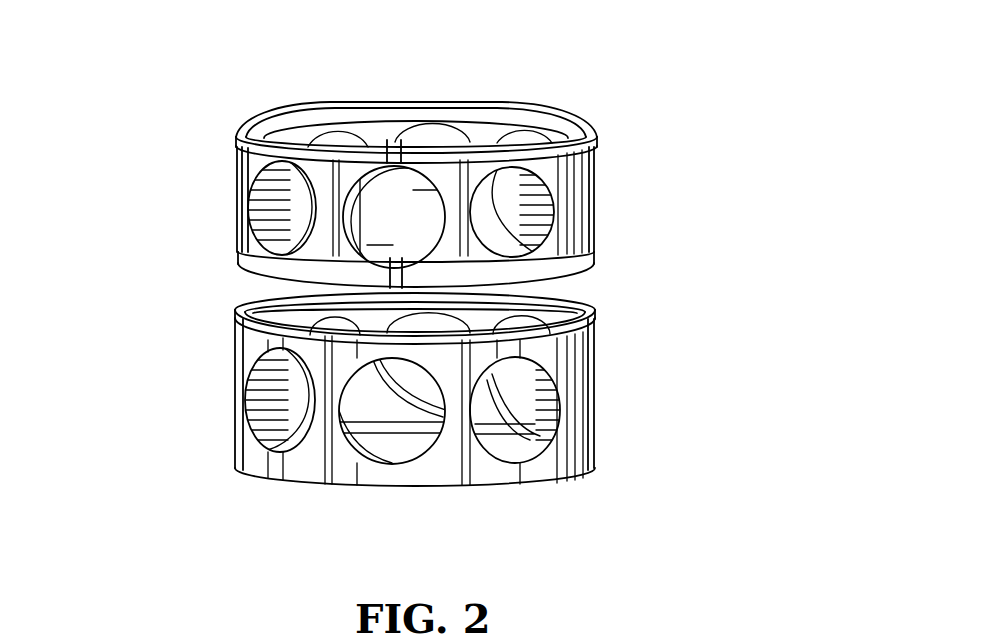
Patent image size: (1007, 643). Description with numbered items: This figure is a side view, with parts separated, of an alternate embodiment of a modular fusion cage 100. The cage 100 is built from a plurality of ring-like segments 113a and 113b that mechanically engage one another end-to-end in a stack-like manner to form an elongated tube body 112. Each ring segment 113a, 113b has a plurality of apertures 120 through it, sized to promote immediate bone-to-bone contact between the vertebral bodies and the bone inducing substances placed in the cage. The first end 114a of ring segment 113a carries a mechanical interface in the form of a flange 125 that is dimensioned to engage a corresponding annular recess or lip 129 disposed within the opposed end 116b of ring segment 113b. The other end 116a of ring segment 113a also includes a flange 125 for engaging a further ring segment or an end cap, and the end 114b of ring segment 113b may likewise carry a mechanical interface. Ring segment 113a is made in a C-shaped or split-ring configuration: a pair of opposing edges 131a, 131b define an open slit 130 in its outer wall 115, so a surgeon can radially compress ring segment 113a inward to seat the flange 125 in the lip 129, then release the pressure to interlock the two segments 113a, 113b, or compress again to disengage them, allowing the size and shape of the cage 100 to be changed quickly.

The fusion cage 100 is at (172, 207).
The elongated tube body 112 is at (761, 90).
The ring-like segment 113a is at (243, 106).
The ring-like segment 113b is at (589, 475).
The end 114a is at (238, 232).
The end 114b is at (250, 470).
The outer wall 115 is at (455, 190).
The end 116a is at (244, 132).
The end 116b is at (240, 306).
The apertures 120 is at (390, 457).
The flange 125 is at (567, 125).
The annular recess or lip 129 is at (567, 313).
The open slit 130 is at (392, 254).
The opposing edge 131a is at (386, 150).
The opposing edge 131b is at (475, 146).